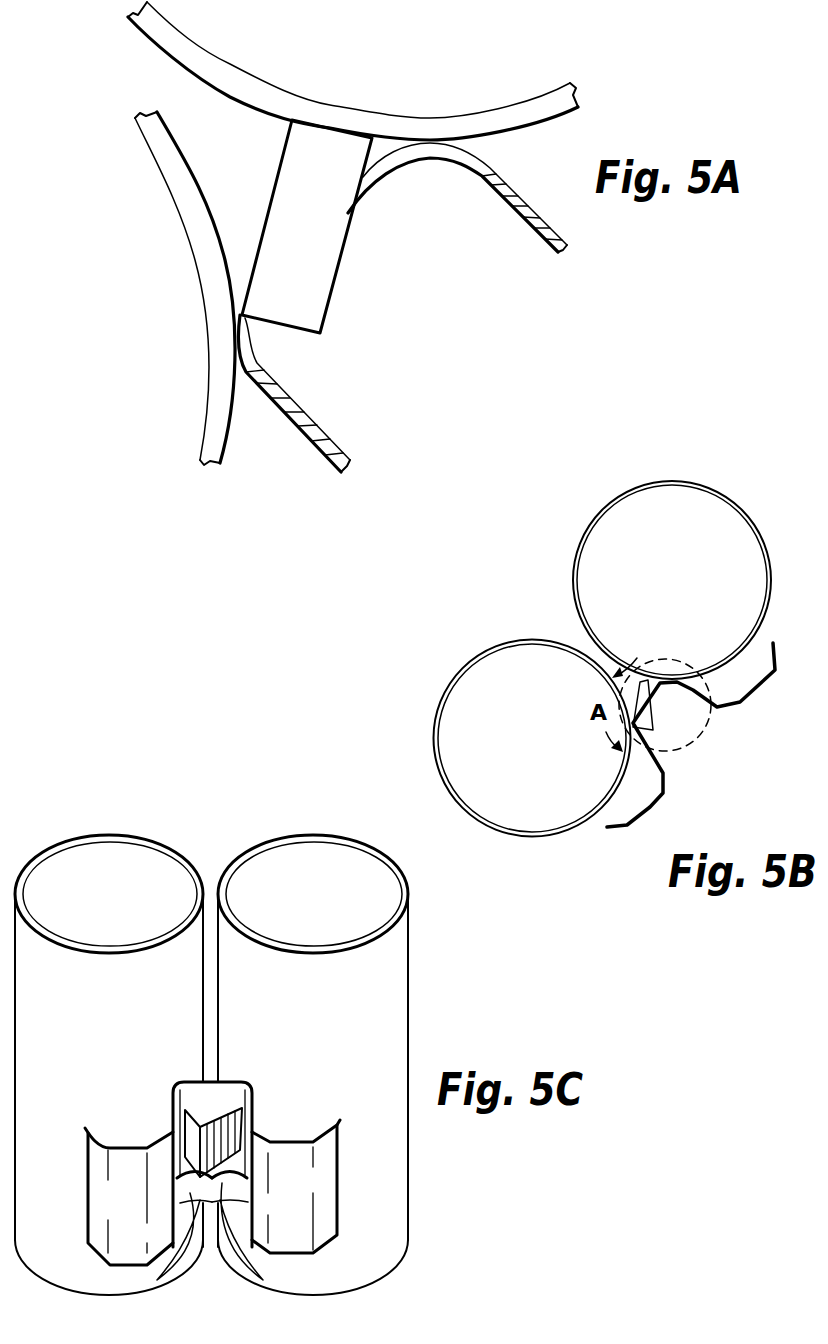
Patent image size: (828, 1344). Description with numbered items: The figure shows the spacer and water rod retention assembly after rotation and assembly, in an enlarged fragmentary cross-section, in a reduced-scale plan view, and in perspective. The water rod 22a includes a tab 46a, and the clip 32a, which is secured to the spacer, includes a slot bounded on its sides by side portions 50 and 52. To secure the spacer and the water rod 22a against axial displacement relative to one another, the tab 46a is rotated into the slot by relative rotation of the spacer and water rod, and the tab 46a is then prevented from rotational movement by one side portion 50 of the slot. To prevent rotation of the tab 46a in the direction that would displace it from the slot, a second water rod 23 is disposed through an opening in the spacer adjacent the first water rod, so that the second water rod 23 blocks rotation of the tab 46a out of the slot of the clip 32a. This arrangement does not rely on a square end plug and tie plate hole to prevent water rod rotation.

In FIG. 5A, the water rod 22a is at (165, 57).
In FIG. 5B, the water rod 22a is at (605, 508).
In FIG. 5C, the water rod 22a is at (291, 838).
In FIG. 5A, the second water rod 23 is at (159, 163).
In FIG. 5B, the second water rod 23 is at (433, 728).
In FIG. 5C, the second water rod 23 is at (65, 840).
In FIG. 5A, the clip 32a is at (513, 214).
In FIG. 5B, the clip 32a is at (650, 807).
In FIG. 5C, the clip 32a is at (137, 1142).
In FIG. 5A, the tab 46a is at (305, 325).
In FIG. 5B, the tab 46a is at (654, 727).
In FIG. 5C, the tab 46a is at (233, 1133).
In FIG. 5C, the side portion 50 is at (263, 1280).
In FIG. 5C, the side portion 52 is at (157, 1280).